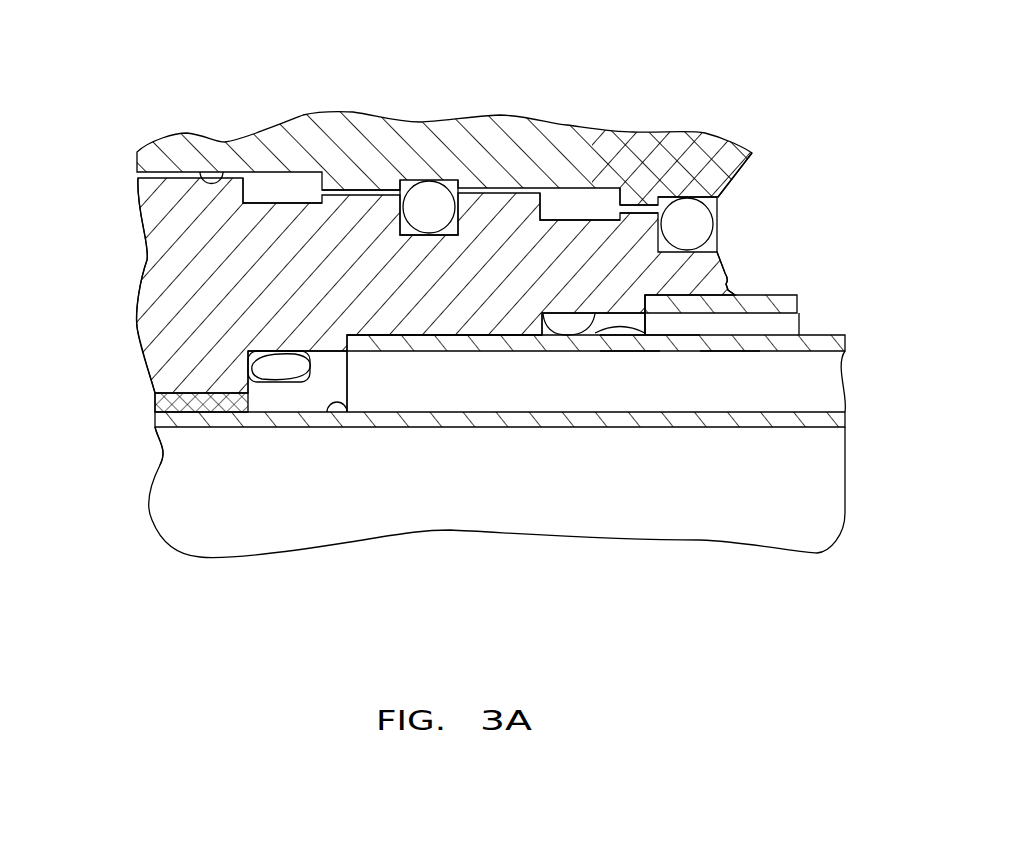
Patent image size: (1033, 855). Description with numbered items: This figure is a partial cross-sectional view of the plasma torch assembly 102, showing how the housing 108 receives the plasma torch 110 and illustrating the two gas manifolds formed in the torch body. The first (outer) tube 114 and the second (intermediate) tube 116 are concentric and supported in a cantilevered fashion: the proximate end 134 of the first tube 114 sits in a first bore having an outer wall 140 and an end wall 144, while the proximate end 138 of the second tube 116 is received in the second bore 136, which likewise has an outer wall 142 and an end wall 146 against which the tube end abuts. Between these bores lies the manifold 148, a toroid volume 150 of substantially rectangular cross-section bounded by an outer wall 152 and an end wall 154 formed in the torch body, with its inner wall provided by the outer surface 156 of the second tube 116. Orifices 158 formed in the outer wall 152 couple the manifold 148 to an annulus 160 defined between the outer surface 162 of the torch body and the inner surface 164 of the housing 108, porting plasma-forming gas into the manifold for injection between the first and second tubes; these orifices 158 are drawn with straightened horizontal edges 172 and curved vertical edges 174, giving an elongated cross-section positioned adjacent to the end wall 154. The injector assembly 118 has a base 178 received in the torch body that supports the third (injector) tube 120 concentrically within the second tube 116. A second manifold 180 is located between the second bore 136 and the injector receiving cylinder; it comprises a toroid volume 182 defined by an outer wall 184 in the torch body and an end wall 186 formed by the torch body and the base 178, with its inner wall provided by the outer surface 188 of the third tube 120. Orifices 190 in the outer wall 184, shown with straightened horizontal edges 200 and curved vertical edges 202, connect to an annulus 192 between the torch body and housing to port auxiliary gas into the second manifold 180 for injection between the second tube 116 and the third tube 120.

The plasma torch assembly 102 is at (773, 150).
The housing 108 is at (320, 365).
The plasma torch 110 is at (137, 195).
The first (outer) tube 114 is at (791, 295).
The second (intermediate) tube 116 is at (847, 335).
The injector assembly 118 is at (150, 400).
The third (injector) tube 120 is at (822, 420).
The proximate end of the first tube 134 is at (745, 292).
The second bore 136 is at (420, 340).
The proximate end of the second tube 138 is at (466, 370).
The outer wall of the first bore 140 is at (722, 272).
The outer wall of the second bore 142 is at (583, 205).
The end wall of the first bore 144 is at (668, 200).
The end wall of the second bore 146 is at (355, 262).
The manifold 148 is at (632, 325).
The toroid volume 150 is at (636, 330).
The outer wall of the manifold 152 is at (612, 190).
The end wall of the manifold 154 is at (500, 340).
The outer surface of the second tube 156 is at (813, 335).
The orifices 158 is at (712, 345).
The annulus 160 is at (583, 318).
The outer surface of the torch body 162 is at (690, 205).
The inner surface of the housing 164 is at (228, 145).
The straightened horizontal edges 172 is at (600, 325).
The curved vertical edges 174 is at (582, 333).
The base 178 is at (162, 445).
The second manifold 180 is at (340, 360).
The toroid volume of the second manifold 182 is at (247, 395).
The outer wall of the second manifold 184 is at (275, 350).
The end wall of the second manifold 186 is at (248, 352).
The outer surface of the third tube 188 is at (378, 415).
The orifices of the second manifold 190 is at (305, 360).
The annulus for auxiliary gas 192 is at (263, 180).
The straightened horizontal edges 200 is at (288, 383).
The curved vertical edges 202 is at (262, 366).